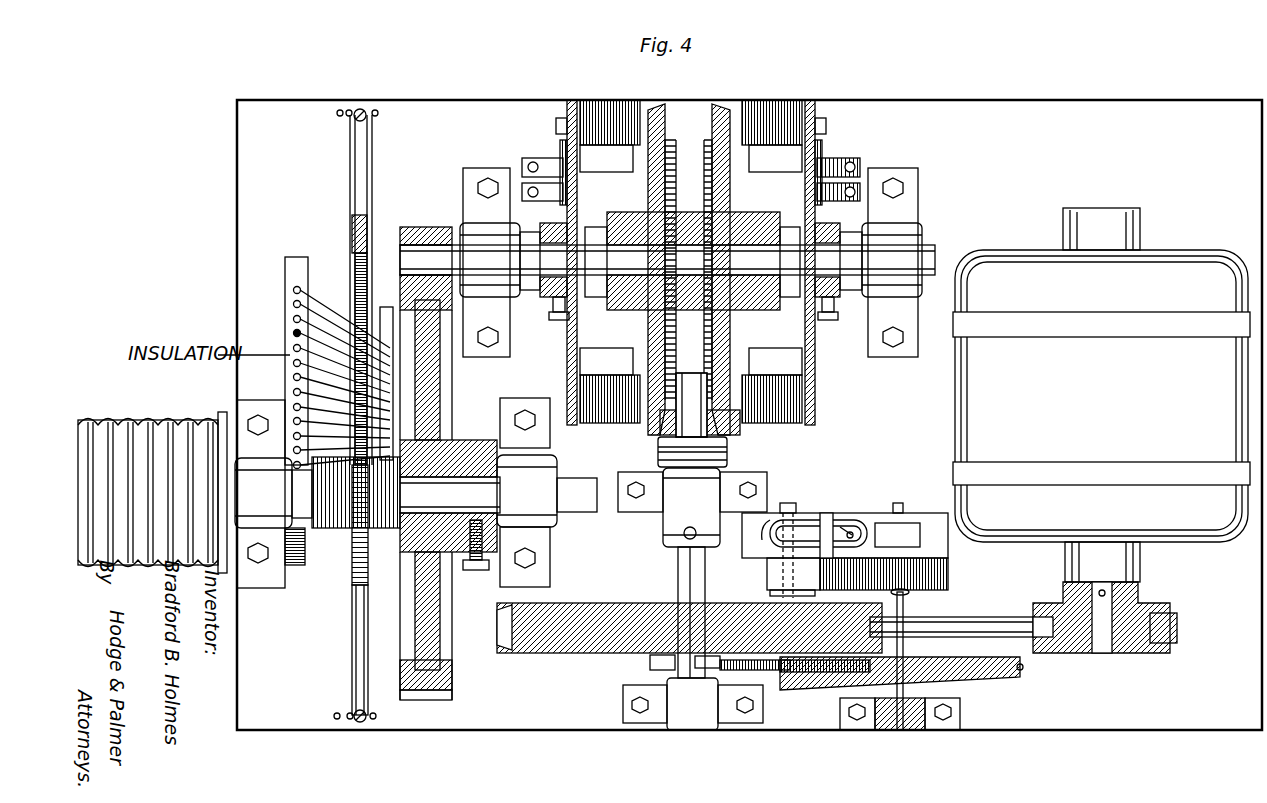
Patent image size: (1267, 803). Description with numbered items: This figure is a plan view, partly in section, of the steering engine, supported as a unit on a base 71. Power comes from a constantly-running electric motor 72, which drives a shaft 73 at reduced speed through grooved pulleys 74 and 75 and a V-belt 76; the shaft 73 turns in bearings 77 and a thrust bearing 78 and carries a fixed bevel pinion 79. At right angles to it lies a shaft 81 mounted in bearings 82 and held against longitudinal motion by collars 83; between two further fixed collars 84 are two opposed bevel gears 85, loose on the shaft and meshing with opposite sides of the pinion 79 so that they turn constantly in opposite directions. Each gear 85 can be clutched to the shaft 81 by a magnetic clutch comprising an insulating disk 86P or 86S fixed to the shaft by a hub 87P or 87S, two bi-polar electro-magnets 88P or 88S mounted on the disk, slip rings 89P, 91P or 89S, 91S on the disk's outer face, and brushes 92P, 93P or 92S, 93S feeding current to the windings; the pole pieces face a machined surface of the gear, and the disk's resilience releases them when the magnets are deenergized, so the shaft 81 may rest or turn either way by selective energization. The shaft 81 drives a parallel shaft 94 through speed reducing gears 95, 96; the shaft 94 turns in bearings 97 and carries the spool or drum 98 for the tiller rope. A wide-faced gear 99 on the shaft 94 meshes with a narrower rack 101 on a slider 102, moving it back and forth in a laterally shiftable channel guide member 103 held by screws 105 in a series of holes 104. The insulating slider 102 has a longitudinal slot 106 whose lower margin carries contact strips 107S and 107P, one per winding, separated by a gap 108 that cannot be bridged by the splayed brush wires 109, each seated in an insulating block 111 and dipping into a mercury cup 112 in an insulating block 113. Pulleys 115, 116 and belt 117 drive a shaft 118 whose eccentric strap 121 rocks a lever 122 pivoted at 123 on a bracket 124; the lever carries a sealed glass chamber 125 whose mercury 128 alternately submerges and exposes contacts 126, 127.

The base 71 is at (472, 730).
The electric motor 72 is at (1168, 262).
The shaft 73 is at (688, 575).
The grooved pulley 74 is at (1138, 655).
The grooved pulley 75 is at (548, 653).
The V-belt 76 is at (965, 617).
The bearings 77 is at (680, 505).
The thrust bearing 78 is at (728, 450).
The bevel pinion 79 is at (668, 430).
The shaft 81 is at (685, 255).
The bearings 82 is at (915, 242).
The collars 83 is at (530, 297).
The collars 84 is at (600, 262).
The bevel gears 85 is at (665, 125).
The insulating disk 86P is at (572, 100).
The insulating disk 86S is at (815, 104).
The hub 87P is at (555, 322).
The hub 87S is at (838, 232).
The bi-polar electro-magnets 88P is at (612, 100).
The bi-polar electro-magnets 88S is at (790, 100).
The slip ring 89P is at (567, 135).
The slip ring 89S is at (818, 140).
The slip ring 91P is at (570, 190).
The slip ring 91S is at (822, 160).
The brush 92P is at (522, 160).
The brush 92S is at (817, 175).
The brush 93P is at (555, 200).
The brush 93S is at (860, 188).
The shaft 94 is at (450, 495).
The speed reducing gear 95 is at (420, 228).
The speed reducing gear 96 is at (430, 395).
The bearings 97 is at (416, 493).
The spool or drum 98 is at (168, 422).
The gear 99 is at (327, 530).
The rack 101 is at (358, 607).
The slider 102 is at (352, 235).
The channel guide member 103 is at (352, 668).
The holes 104 is at (348, 117).
The screws 105 is at (360, 109).
The slot or aperture 106 is at (348, 272).
The contact strip 107P is at (362, 265).
The contact strip 107S is at (345, 432).
The gap 108 is at (350, 405).
The brush wires 109 is at (340, 312).
The insulating block 111 is at (385, 307).
The mercury cups 112 is at (292, 318).
The insulating block 113 is at (290, 336).
The pulley 115 is at (655, 663).
The pulley 116 is at (985, 685).
The belt 117 is at (778, 680).
The shaft 118 is at (900, 732).
The eccentric strap 121 is at (900, 503).
The lever 122 is at (930, 513).
The pivot 123 is at (790, 503).
The bracket 124 is at (770, 590).
The sealed glass chamber 125 is at (772, 520).
The contact 126 is at (850, 532).
The contact 127 is at (842, 527).
The mercury 128 is at (805, 535).